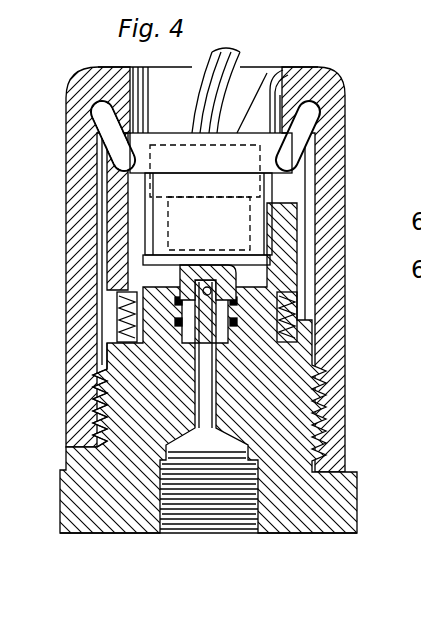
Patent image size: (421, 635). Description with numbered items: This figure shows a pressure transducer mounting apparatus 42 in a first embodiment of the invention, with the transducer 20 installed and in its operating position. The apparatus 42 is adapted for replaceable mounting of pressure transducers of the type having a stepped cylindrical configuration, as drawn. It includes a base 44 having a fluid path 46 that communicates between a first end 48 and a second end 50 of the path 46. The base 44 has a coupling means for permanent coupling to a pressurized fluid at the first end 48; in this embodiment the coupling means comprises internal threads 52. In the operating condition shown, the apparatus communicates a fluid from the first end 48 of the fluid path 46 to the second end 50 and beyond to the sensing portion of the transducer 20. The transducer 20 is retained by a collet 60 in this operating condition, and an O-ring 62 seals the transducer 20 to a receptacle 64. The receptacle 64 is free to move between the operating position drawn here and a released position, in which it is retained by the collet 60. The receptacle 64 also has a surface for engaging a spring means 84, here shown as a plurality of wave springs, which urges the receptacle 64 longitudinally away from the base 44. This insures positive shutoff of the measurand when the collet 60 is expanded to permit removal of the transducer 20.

The transducer 20 is at (264, 66).
The mounting apparatus 42 is at (116, 542).
The base 44 is at (297, 536).
The fluid path 46 is at (210, 392).
The first end 48 is at (218, 536).
The second end 50 is at (236, 264).
The internal threads 52 is at (174, 530).
The collet 60 is at (107, 245).
The O-ring 62 is at (128, 212).
The receptacle 64 is at (118, 296).
The spring means 84 is at (100, 356).